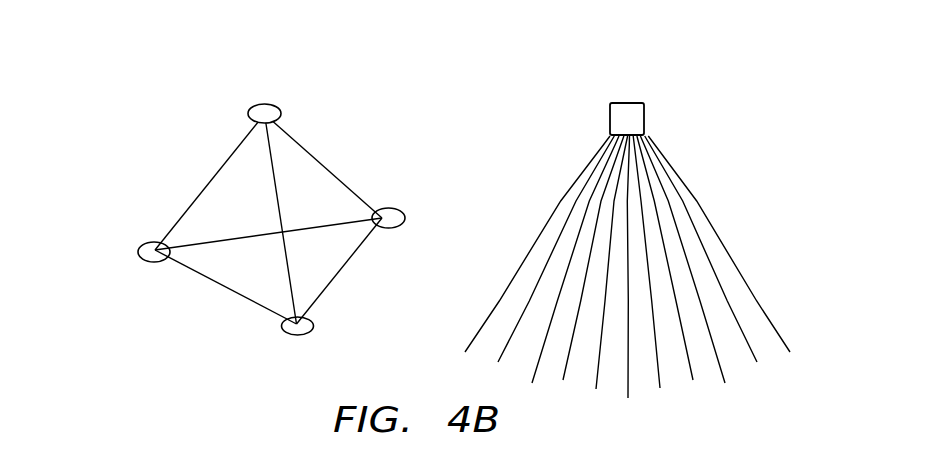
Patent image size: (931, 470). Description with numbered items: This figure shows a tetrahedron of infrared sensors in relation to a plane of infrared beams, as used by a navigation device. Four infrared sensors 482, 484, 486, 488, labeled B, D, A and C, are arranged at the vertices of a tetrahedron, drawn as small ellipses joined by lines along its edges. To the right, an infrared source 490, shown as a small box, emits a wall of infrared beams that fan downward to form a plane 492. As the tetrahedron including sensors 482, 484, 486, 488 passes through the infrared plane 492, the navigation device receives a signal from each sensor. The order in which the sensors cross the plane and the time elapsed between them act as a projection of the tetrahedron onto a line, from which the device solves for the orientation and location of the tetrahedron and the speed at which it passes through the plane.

The infrared sensor 482 is at (138, 251).
The infrared sensor 484 is at (405, 217).
The infrared sensor 486 is at (263, 103).
The infrared sensor 488 is at (297, 335).
The infrared source 490 is at (644, 120).
The plane of infrared beams 492 is at (542, 189).